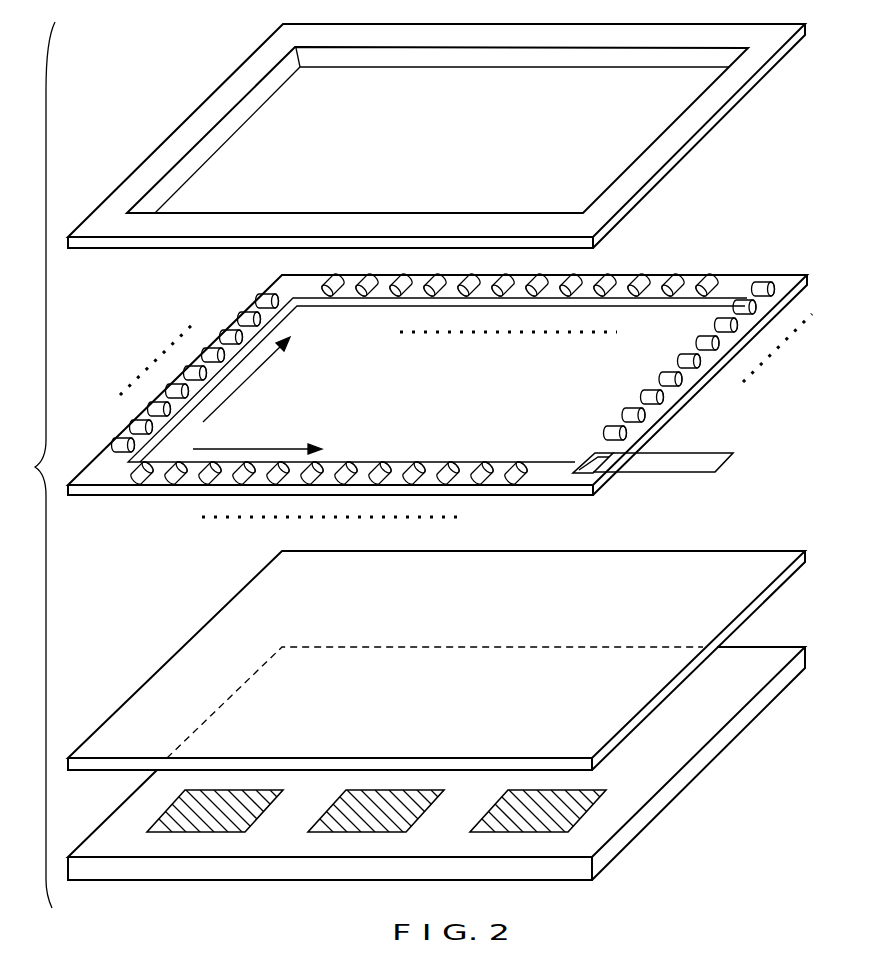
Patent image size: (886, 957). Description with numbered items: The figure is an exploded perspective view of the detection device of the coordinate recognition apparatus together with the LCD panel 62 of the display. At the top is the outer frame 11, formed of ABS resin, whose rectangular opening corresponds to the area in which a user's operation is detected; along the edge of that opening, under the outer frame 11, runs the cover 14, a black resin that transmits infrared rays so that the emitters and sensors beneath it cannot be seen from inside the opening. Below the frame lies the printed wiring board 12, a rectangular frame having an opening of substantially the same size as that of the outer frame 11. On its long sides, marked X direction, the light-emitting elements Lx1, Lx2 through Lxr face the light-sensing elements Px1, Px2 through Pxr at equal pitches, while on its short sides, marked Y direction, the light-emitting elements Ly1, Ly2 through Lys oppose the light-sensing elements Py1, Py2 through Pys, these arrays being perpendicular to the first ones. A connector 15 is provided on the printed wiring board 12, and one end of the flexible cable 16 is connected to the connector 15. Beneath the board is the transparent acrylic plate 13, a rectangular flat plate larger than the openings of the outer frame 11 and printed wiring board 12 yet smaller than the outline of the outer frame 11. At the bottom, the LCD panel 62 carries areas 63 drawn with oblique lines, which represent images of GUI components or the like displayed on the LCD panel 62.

The outer frame 11 is at (708, 128).
The cover 14 is at (388, 63).
The printed wiring board 12 is at (780, 272).
The transparent acrylic plate 13 is at (767, 558).
The connector 15 is at (592, 453).
The flexible cable 16 is at (682, 465).
The LCD panel 62 is at (692, 773).
The areas 63 is at (241, 798).
The light-emitting element Lx1 is at (137, 479).
The light-emitting element Lx2 is at (177, 479).
The light-emitting element Lxr is at (516, 479).
The light-emitting element Ly1 is at (116, 445).
The light-emitting element Ly2 is at (136, 426).
The light-emitting element Lys is at (262, 302).
The light-sensing element Px1 is at (318, 306).
The light-sensing element Px2 is at (362, 306).
The light-sensing element Pxr is at (701, 292).
The light-sensing element Py1 is at (624, 433).
The light-sensing element Py2 is at (643, 415).
The light-sensing element Pys is at (773, 289).